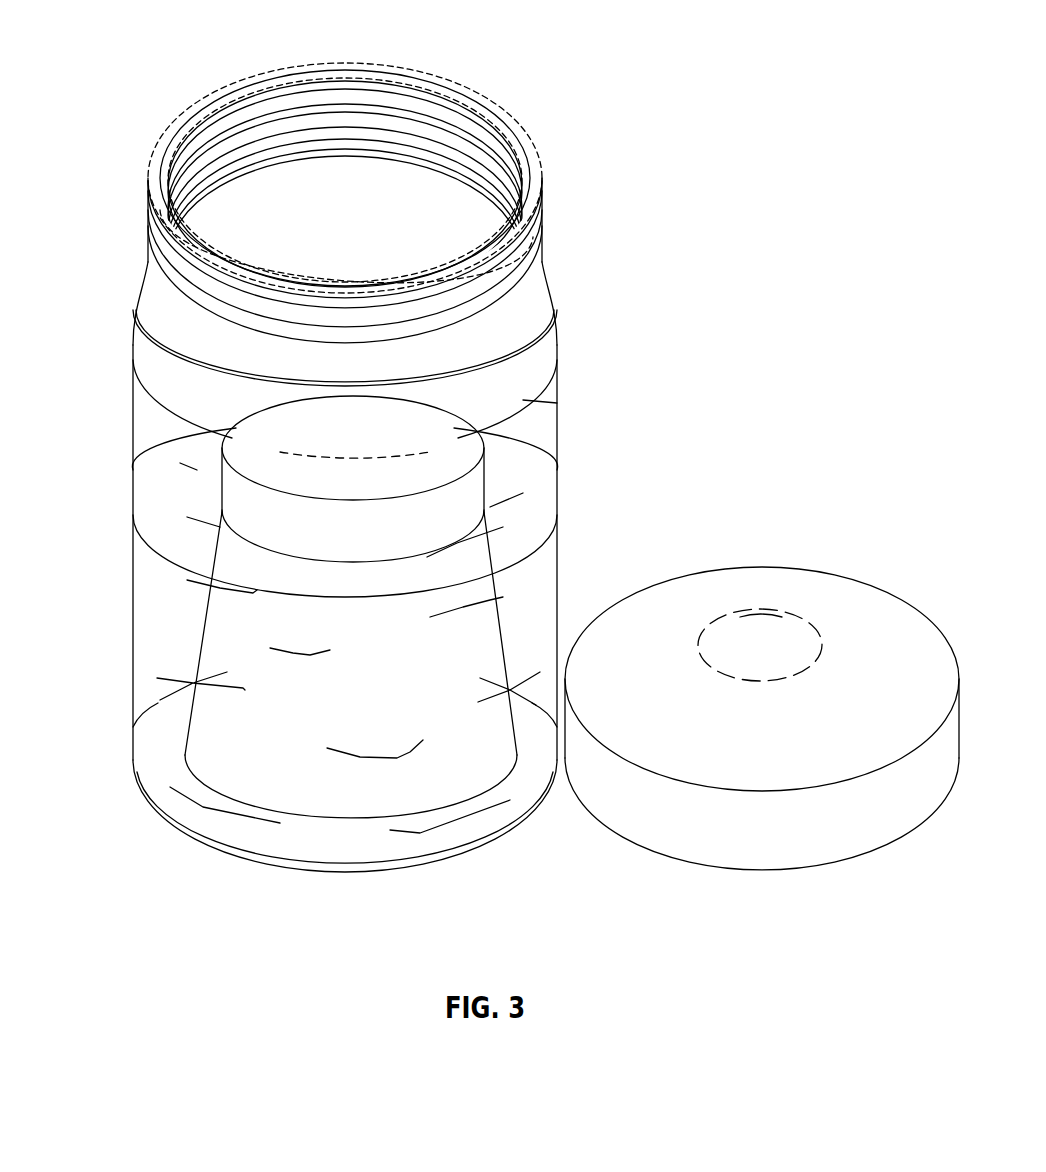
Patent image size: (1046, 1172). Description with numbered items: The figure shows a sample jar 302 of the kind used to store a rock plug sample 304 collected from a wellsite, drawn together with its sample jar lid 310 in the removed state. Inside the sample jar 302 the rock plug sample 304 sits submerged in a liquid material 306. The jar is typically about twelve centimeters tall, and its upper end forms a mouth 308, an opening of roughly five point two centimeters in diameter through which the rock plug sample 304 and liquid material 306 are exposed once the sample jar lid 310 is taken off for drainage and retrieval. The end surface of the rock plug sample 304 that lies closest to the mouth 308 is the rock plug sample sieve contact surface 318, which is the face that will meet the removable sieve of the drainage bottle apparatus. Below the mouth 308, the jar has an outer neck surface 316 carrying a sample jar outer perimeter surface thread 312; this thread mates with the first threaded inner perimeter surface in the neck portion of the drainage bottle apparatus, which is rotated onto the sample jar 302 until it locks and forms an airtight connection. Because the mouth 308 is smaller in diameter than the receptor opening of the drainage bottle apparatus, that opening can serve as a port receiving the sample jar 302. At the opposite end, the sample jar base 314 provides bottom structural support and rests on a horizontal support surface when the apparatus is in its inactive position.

The sample jar 302 is at (121, 62).
The rock plug sample 304 is at (537, 563).
The liquid material 306 is at (548, 497).
The mouth 308 is at (368, 63).
The sample jar lid 310 is at (853, 596).
The sample jar outer perimeter surface thread 312 is at (500, 118).
The sample jar base 314 is at (453, 838).
The outer neck surface 316 is at (660, 63).
The rock plug sample sieve contact surface 318 is at (432, 457).